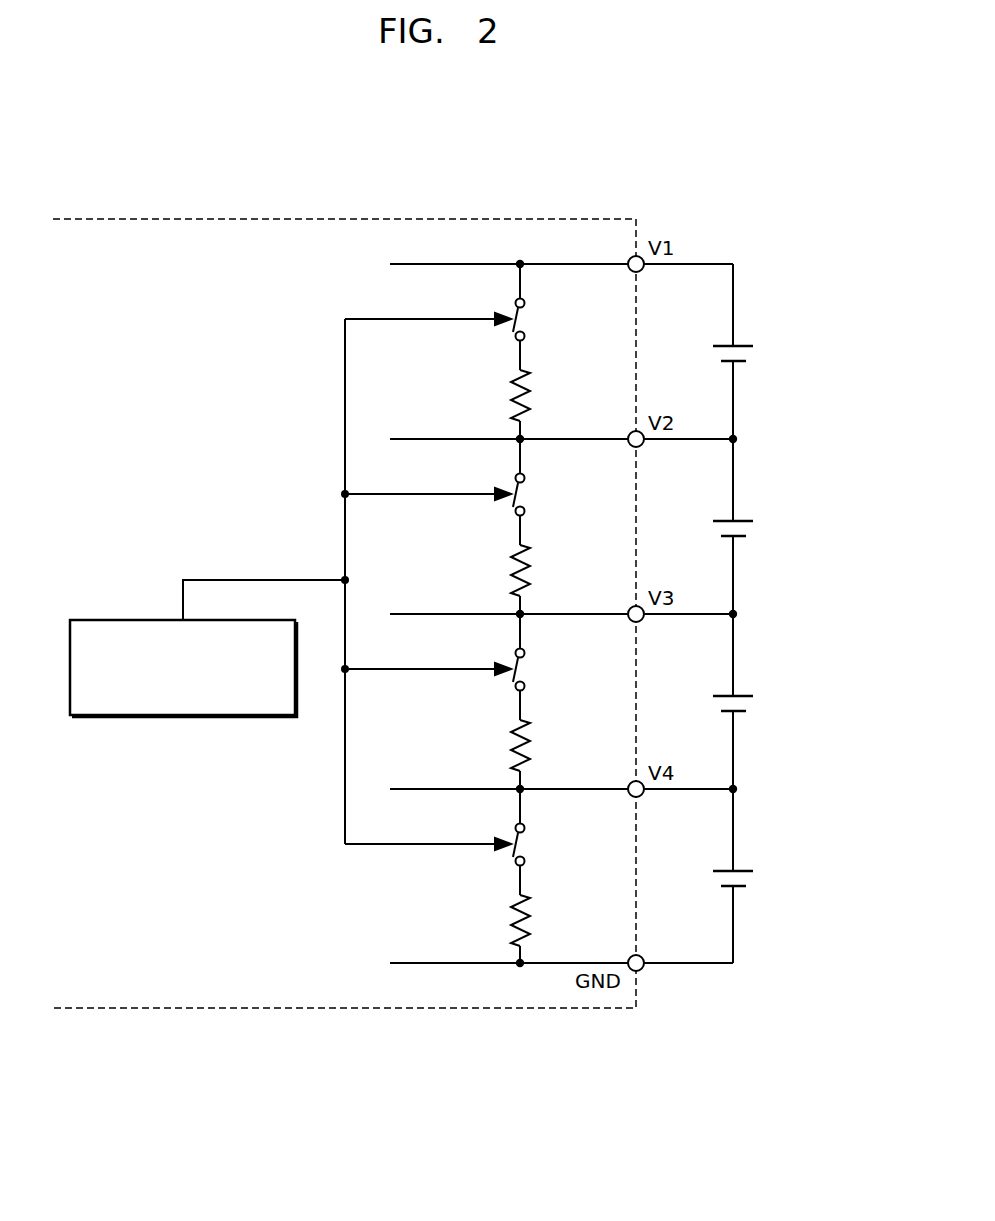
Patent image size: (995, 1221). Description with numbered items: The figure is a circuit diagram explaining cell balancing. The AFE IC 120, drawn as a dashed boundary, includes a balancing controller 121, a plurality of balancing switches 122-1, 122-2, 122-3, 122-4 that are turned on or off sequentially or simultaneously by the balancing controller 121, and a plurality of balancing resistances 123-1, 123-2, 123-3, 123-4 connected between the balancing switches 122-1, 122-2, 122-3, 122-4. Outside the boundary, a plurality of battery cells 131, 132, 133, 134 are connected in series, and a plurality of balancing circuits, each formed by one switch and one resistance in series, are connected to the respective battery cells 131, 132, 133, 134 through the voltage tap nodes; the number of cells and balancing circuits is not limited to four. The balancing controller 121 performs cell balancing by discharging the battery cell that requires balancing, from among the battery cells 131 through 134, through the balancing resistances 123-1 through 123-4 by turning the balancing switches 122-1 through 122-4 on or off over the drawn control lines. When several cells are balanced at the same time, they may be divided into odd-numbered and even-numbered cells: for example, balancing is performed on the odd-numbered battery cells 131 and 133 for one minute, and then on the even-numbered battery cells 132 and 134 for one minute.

The AFE IC 120 is at (497, 1008).
The balancing controller 121 is at (183, 715).
The balancing switch 122-1 is at (553, 320).
The balancing switch 122-2 is at (553, 495).
The balancing switch 122-3 is at (553, 670).
The balancing switch 122-4 is at (553, 845).
The balancing resistance 123-1 is at (552, 395).
The balancing resistance 123-2 is at (552, 570).
The balancing resistance 123-3 is at (552, 745).
The balancing resistance 123-4 is at (552, 920).
The battery cell 131 is at (757, 356).
The battery cell 132 is at (757, 531).
The battery cell 133 is at (757, 706).
The battery cell 134 is at (757, 881).